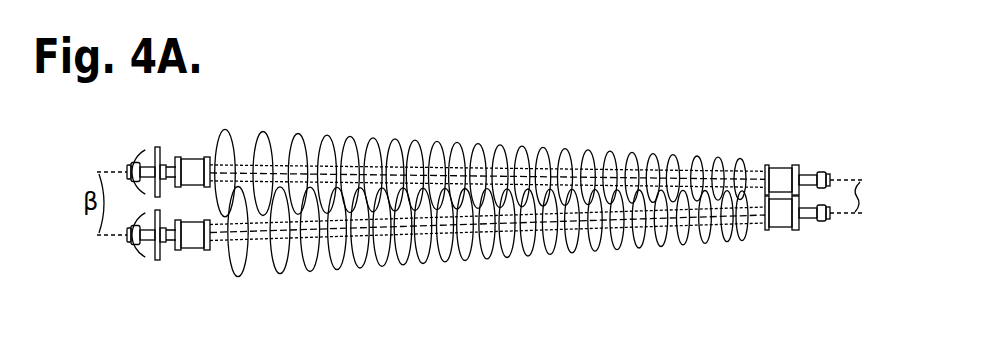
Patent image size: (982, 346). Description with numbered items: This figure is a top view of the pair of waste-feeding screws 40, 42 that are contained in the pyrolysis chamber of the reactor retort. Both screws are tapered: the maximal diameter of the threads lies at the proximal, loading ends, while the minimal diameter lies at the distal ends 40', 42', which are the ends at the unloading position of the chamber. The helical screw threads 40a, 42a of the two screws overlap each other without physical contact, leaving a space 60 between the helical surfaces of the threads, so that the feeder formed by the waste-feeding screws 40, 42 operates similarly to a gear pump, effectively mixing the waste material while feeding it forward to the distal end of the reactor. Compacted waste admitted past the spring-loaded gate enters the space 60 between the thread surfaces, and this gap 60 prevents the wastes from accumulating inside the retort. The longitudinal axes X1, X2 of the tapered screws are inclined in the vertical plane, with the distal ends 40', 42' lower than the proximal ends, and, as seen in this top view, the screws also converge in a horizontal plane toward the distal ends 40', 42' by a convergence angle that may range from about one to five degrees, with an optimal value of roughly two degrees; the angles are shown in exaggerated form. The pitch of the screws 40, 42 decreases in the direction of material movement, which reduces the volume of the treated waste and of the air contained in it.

The waste-feeding screw 40 is at (478, 250).
The screw thread 40a is at (242, 252).
The distal end 40' is at (777, 250).
The waste-feeding screw 42 is at (478, 147).
The screw thread 42a is at (263, 152).
The distal end 42' is at (781, 139).
The space between thread surfaces 60 is at (523, 187).
The longitudinal axis X1 is at (484, 176).
The longitudinal axis X2 is at (484, 225).